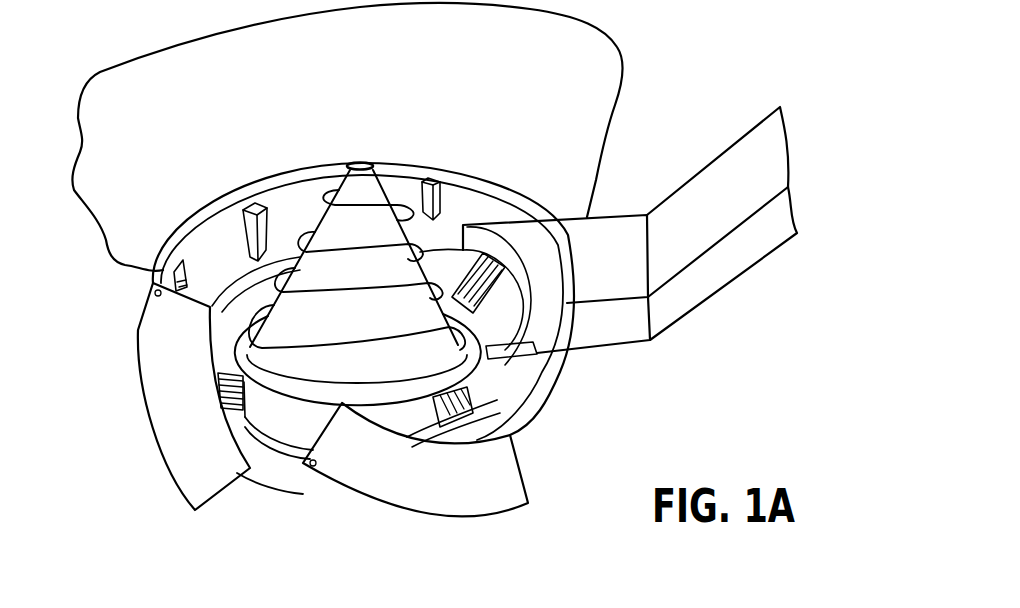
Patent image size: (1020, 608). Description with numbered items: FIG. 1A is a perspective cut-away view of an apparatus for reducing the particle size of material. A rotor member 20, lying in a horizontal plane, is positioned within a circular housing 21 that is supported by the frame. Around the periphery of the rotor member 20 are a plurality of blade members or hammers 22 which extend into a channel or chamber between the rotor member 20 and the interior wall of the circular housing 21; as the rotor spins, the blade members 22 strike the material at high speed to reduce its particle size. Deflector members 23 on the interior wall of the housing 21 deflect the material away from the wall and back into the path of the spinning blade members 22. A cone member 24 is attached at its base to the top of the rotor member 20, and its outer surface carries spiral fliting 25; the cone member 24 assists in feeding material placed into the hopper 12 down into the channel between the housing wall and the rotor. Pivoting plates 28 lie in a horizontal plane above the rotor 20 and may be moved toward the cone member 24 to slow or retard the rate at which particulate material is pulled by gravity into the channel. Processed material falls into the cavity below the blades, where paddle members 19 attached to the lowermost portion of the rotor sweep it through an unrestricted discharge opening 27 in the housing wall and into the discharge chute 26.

The hopper 12 is at (600, 58).
The paddle members 19 is at (505, 349).
The rotor member 20 is at (282, 456).
The circular housing 21 is at (526, 404).
The blade members or hammers 22 is at (503, 280).
The deflector members 23 is at (243, 230).
The cone member 24 is at (503, 234).
The spiral fliting 25 is at (430, 265).
The discharge chute 26 is at (730, 275).
The discharge opening 27 is at (540, 290).
The pivoting plates 28 is at (148, 393).